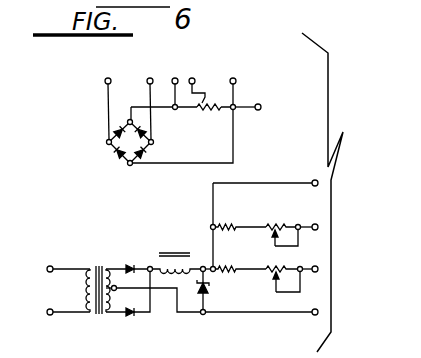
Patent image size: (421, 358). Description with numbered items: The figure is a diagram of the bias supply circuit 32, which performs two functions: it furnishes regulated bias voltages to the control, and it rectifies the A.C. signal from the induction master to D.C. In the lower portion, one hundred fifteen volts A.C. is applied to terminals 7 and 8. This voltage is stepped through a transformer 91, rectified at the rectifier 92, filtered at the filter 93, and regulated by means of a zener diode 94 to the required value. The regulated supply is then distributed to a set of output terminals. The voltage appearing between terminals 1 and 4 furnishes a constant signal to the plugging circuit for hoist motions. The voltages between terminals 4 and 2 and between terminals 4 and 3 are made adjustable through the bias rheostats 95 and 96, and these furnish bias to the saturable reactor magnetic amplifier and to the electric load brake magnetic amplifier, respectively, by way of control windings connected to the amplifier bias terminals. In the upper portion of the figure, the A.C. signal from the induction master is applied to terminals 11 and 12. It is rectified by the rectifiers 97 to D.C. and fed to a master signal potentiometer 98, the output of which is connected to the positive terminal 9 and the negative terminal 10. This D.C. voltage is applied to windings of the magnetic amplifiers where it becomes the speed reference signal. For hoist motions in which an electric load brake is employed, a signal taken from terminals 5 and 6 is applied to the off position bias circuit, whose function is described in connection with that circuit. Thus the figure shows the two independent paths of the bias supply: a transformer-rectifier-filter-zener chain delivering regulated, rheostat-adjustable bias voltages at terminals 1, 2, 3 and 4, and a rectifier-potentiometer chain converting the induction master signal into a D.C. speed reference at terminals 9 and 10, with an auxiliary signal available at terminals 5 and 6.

The terminal 1 is at (320, 183).
The terminal 2 is at (315, 227).
The terminal 3 is at (316, 269).
The terminal 4 is at (267, 312).
The terminal 5 is at (175, 85).
The terminal 6 is at (255, 107).
The terminal 7 is at (61, 269).
The terminal 8 is at (61, 312).
The positive terminal 9 is at (196, 82).
The negative terminal 10 is at (237, 83).
The terminal 11 is at (111, 100).
The terminal 12 is at (152, 100).
The bias supply circuit 32 is at (84, 213).
The transformer 91 is at (98, 264).
The rectifier 92 is at (136, 271).
The filter 93 is at (173, 249).
The zener diode 94 is at (208, 296).
The bias rheostat 95 is at (284, 224).
The bias rheostat 96 is at (280, 264).
The rectifiers 97 is at (111, 150).
The master signal potentiometer 98 is at (211, 101).